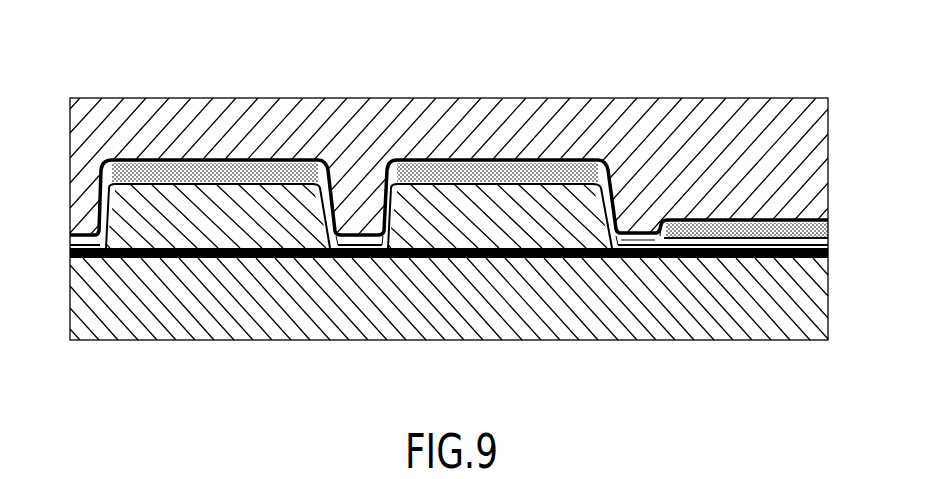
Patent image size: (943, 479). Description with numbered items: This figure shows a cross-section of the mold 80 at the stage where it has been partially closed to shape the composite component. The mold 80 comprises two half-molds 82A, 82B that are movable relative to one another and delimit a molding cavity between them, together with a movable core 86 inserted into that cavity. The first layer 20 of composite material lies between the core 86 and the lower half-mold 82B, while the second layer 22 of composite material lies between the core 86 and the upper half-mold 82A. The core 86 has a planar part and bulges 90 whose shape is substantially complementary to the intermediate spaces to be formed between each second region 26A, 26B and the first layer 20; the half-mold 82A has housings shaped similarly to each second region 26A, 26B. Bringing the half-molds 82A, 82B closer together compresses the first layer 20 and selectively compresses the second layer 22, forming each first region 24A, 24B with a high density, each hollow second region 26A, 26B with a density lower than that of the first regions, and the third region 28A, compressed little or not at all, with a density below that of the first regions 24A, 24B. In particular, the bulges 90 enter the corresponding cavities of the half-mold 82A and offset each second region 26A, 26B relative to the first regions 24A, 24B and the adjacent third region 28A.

The mold 80 is at (58, 94).
The half-mold 82A is at (100, 135).
The half-mold 82B is at (92, 266).
The second region 26A is at (226, 158).
The second region 26B is at (530, 159).
The third region 28A is at (712, 227).
The second layer 22 is at (828, 229).
The first layer 20 is at (808, 258).
The bulge 90 is at (222, 225).
The first region 24A is at (357, 228).
The first region 24B is at (625, 232).
The core 86 is at (652, 242).